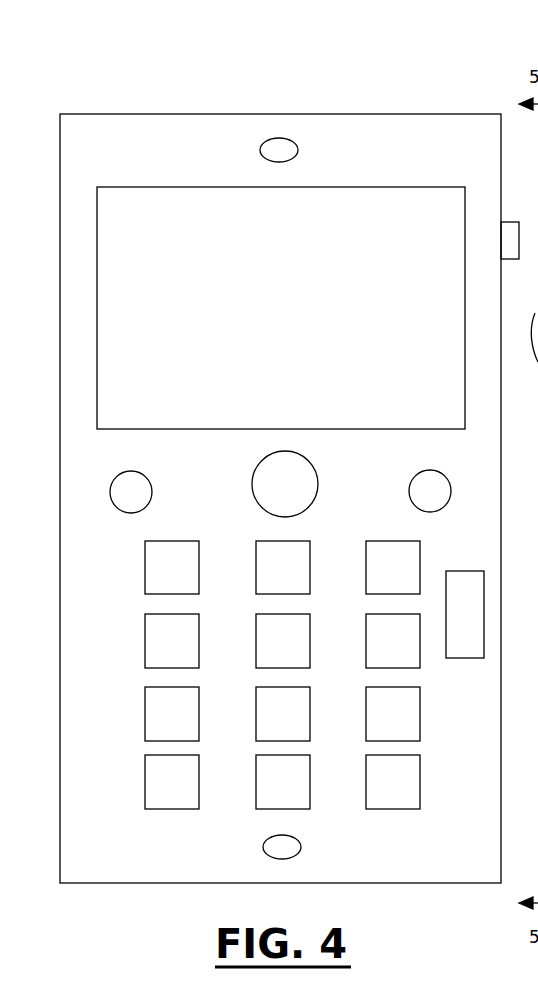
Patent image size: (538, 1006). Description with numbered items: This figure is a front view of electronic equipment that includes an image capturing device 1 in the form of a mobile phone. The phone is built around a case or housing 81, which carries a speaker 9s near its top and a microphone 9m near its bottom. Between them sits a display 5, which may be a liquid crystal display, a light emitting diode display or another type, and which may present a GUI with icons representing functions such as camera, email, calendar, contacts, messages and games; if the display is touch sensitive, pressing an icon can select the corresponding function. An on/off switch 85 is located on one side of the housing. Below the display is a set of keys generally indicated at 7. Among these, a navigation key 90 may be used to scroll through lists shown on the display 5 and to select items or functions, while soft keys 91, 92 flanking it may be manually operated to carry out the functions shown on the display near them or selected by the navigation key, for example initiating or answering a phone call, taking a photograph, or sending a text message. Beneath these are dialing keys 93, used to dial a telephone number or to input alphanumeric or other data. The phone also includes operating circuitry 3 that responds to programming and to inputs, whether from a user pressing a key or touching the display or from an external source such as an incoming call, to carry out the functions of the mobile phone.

The image capturing device 1 is at (106, 74).
The case 81 is at (196, 112).
The speaker 9s is at (276, 138).
The display 5 is at (357, 190).
The on/off switch 85 is at (519, 238).
The keys 7 is at (321, 457).
The soft key 91 is at (152, 492).
The navigation key 90 is at (253, 493).
The soft key 92 is at (409, 497).
The dialing keys 93 is at (456, 522).
The operating circuitry 3 is at (465, 571).
The microphone 9m is at (298, 840).